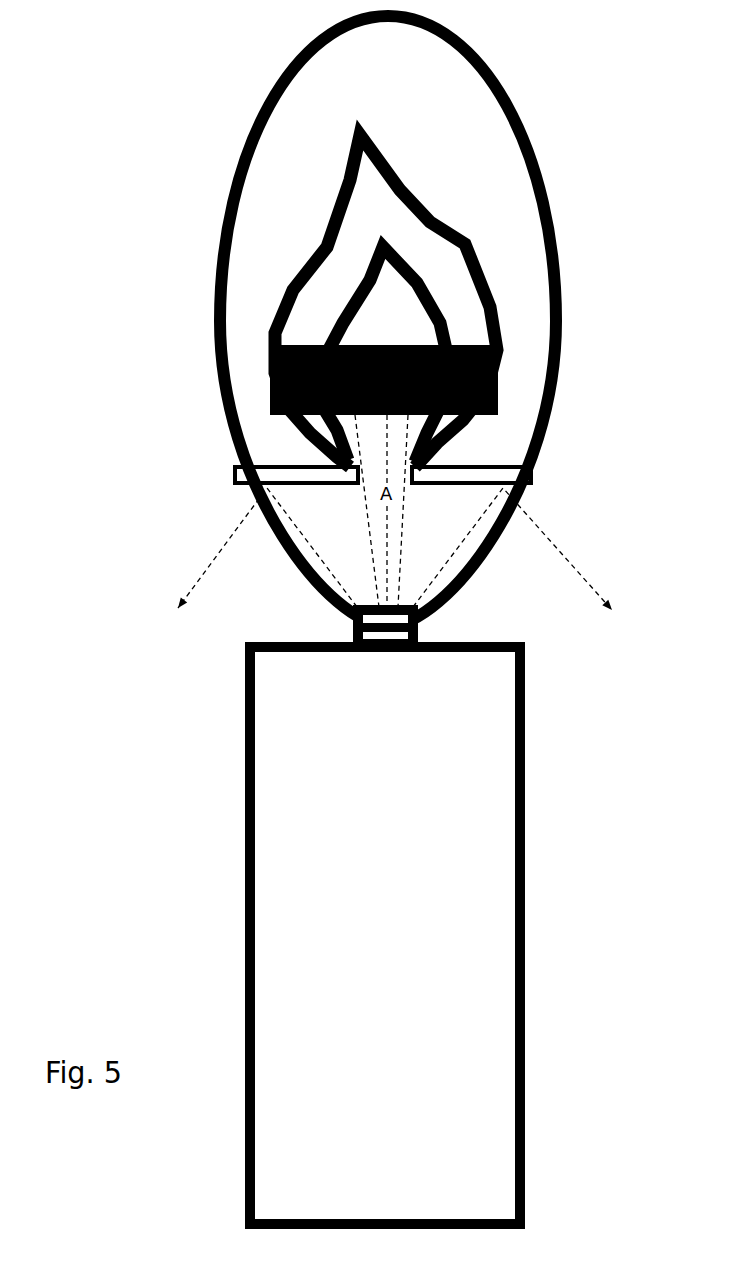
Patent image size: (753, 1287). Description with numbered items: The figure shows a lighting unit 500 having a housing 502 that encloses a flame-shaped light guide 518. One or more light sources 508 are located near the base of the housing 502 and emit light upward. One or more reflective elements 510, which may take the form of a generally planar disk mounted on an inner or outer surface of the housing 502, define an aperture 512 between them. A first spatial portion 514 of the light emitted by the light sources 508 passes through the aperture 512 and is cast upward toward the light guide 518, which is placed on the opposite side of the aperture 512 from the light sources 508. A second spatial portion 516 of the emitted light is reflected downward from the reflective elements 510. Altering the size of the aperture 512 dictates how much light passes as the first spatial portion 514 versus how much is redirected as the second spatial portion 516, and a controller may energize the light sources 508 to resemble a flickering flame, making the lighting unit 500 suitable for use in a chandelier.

The lighting unit 500 is at (70, 82).
The housing 502 is at (283, 67).
The light sources 508 is at (420, 604).
The reflective elements 510 is at (273, 463).
The aperture 512 is at (402, 484).
The first spatial portion of light 514 is at (420, 403).
The second spatial portion of light 516 is at (180, 537).
The light guide 518 is at (343, 177).